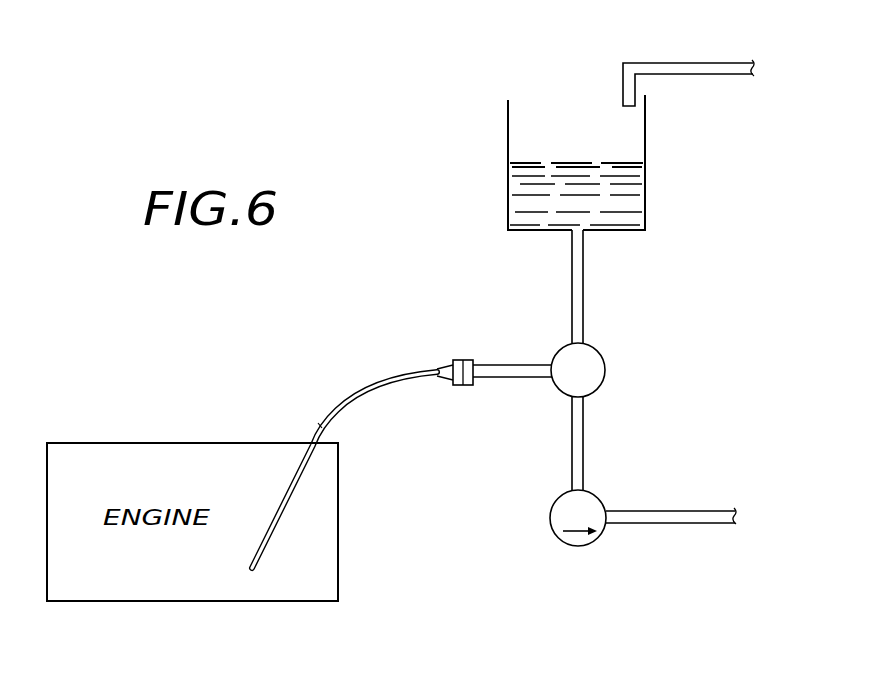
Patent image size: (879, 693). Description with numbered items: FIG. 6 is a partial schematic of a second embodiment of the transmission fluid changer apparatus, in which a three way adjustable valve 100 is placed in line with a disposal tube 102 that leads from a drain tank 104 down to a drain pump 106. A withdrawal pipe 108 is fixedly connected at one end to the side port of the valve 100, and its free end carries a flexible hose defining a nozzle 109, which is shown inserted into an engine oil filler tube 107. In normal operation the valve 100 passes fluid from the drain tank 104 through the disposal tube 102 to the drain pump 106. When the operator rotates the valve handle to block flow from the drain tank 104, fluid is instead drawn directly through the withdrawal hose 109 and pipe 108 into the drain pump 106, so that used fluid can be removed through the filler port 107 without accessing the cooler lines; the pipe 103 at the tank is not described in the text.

The three way adjustable valve 100 is at (598, 352).
The disposal tube 102 is at (590, 287).
The fill pipe 103 is at (688, 63).
The drain tank 104 is at (647, 213).
The drain pump 106 is at (556, 535).
The engine oil filler tube 107 is at (318, 428).
The withdrawal pipe 108 is at (513, 365).
The flexible hose 109 is at (346, 400).